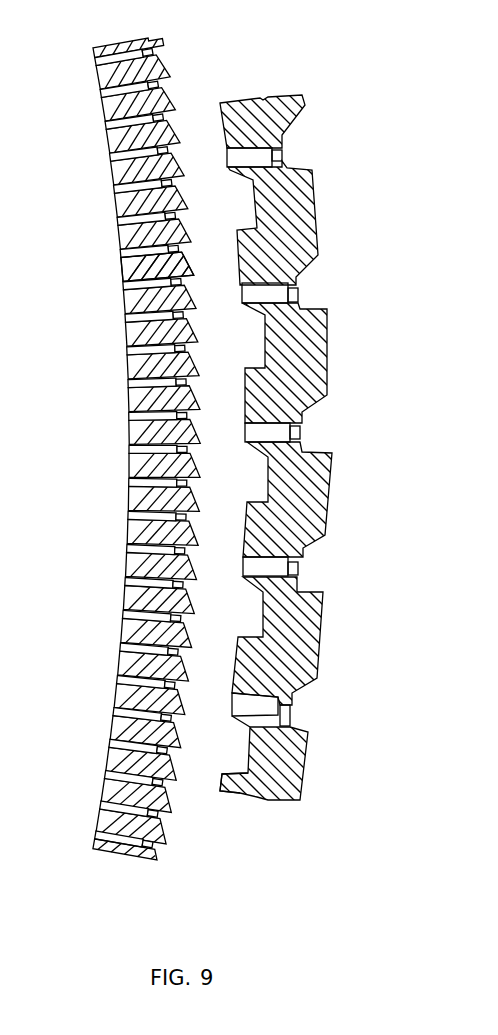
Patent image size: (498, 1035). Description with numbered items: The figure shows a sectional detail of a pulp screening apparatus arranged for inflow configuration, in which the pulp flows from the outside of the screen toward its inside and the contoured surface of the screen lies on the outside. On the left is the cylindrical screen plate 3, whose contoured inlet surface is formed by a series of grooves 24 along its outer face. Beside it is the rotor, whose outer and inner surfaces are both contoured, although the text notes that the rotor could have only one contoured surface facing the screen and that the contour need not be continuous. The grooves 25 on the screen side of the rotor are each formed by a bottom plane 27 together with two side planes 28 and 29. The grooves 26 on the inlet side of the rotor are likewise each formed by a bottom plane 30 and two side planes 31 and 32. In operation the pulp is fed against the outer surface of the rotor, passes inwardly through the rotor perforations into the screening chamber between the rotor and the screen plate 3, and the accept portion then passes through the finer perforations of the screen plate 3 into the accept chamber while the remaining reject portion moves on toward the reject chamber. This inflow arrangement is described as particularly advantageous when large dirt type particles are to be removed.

The screen plate 3 is at (135, 370).
The grooves 24 is at (138, 273).
The grooves 25 is at (249, 464).
The grooves 26 is at (307, 292).
The bottom plane 27 is at (250, 747).
The side plane 28 is at (291, 722).
The side plane 29 is at (228, 775).
The bottom plane 30 is at (303, 438).
The side plane 31 is at (300, 553).
The side plane 32 is at (300, 588).